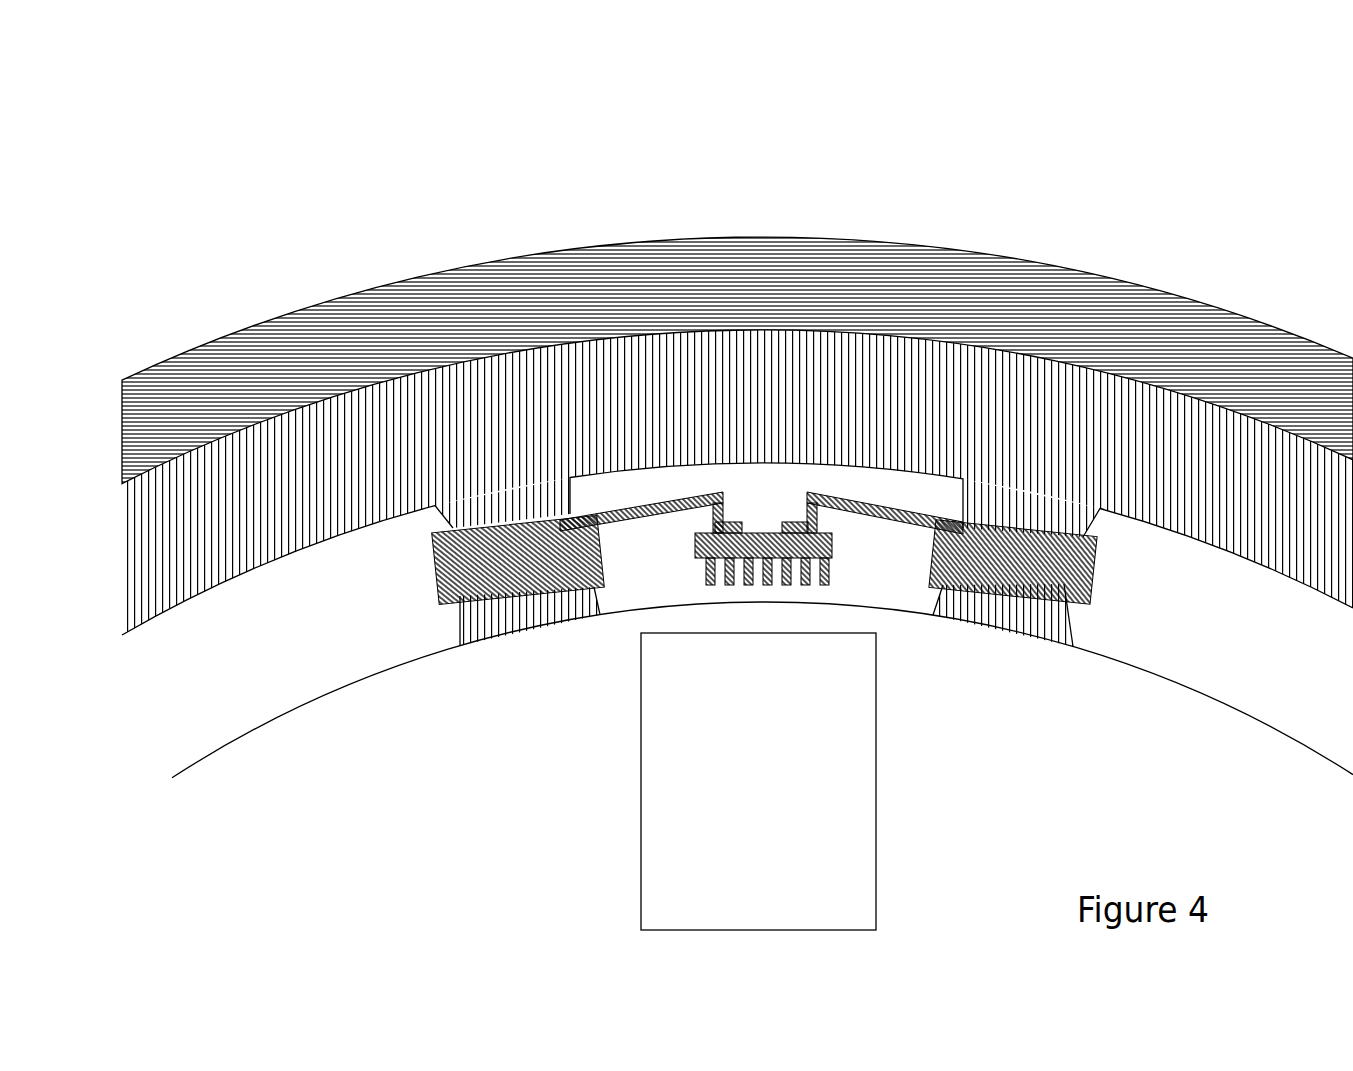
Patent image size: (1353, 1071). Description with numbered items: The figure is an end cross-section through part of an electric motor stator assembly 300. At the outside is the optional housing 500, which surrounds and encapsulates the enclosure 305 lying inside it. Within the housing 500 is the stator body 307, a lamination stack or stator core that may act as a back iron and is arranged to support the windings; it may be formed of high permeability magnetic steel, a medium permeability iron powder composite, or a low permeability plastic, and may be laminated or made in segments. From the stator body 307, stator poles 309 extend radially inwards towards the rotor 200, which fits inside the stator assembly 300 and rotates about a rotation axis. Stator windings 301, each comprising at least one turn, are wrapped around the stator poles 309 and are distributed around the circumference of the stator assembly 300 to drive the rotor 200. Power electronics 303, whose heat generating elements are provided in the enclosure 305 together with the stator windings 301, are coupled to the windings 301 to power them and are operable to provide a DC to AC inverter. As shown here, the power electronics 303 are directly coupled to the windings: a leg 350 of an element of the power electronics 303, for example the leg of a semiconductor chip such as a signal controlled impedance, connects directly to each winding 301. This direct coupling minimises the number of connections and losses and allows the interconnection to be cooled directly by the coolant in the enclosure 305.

The rotor 200 is at (744, 820).
The stator assembly 300 is at (614, 67).
The stator windings 301 is at (992, 535).
The power electronics 303 is at (705, 555).
The enclosure 305 is at (240, 632).
The stator body 307 is at (762, 409).
The stator poles 309 is at (488, 512).
The leg 350 is at (822, 507).
The housing 500 is at (1047, 268).